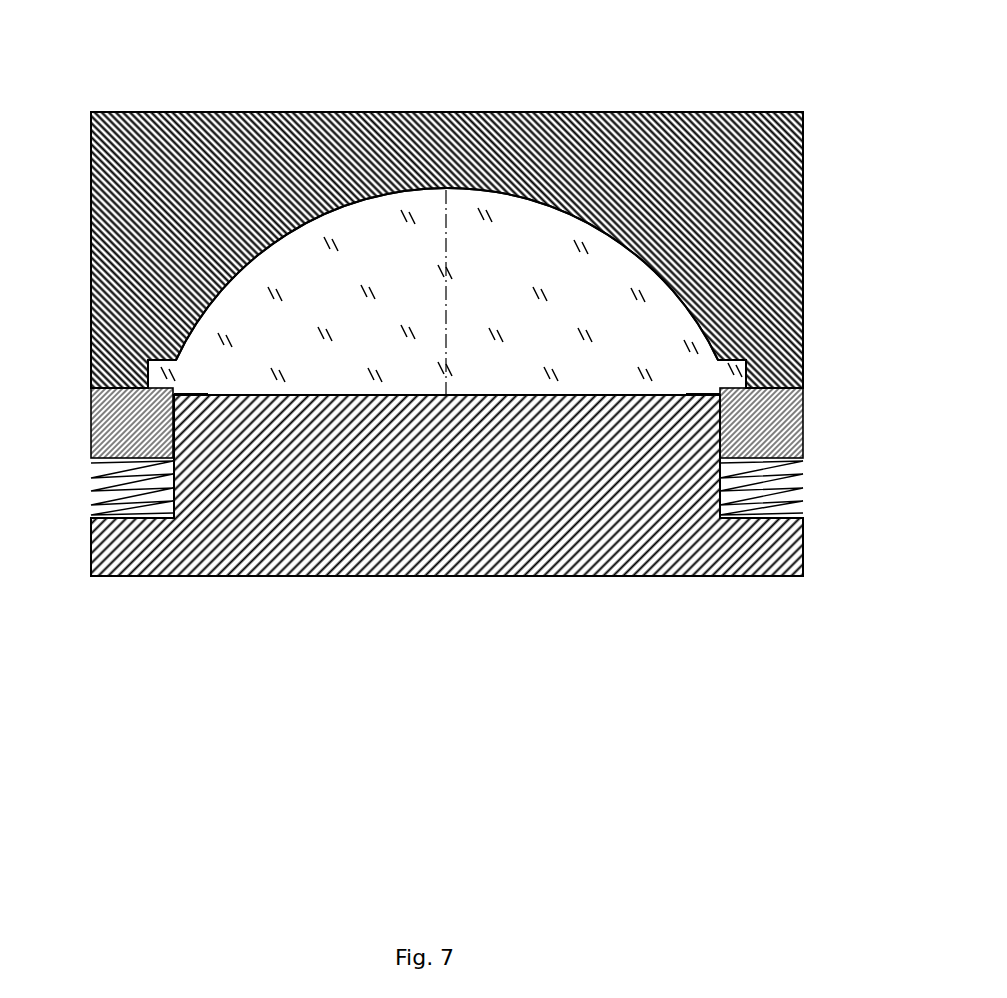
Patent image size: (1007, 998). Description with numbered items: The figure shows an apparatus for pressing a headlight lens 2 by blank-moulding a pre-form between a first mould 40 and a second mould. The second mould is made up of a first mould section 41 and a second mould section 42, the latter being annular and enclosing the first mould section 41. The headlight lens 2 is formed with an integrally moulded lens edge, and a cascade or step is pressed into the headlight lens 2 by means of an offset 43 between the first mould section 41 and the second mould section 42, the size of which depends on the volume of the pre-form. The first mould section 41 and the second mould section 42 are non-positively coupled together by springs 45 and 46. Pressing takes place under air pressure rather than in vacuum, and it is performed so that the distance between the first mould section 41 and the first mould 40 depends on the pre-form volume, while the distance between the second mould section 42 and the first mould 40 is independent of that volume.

The headlight lens 2 is at (492, 205).
The first mould 40 is at (678, 127).
The first mould section 41 is at (465, 515).
The second mould section 42 is at (99, 418).
The offset 43 is at (168, 383).
The spring 45 is at (150, 484).
The spring 46 is at (749, 483).